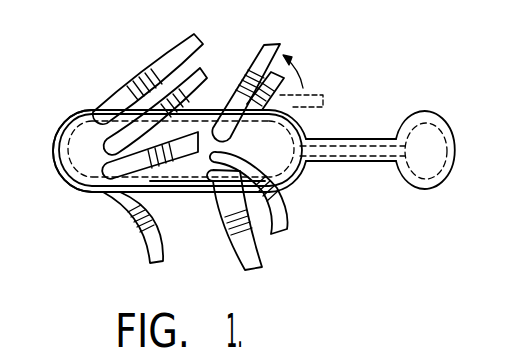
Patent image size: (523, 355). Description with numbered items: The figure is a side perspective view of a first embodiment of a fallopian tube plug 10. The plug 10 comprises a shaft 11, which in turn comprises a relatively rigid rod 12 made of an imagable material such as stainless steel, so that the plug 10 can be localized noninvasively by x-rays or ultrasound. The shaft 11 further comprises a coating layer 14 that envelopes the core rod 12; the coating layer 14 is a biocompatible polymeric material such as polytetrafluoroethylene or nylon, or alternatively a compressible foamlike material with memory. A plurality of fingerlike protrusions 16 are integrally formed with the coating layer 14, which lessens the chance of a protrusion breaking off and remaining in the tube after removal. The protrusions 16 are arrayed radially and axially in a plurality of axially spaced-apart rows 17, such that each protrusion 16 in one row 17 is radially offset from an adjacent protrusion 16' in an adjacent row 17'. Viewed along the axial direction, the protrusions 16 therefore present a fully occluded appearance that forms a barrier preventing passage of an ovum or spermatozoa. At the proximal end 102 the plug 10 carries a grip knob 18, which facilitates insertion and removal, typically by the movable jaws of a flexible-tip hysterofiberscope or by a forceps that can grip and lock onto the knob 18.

The fallopian tube plug 10 is at (116, 50).
The shaft 11 is at (183, 193).
The rod 12 is at (280, 158).
The coating layer 14 is at (68, 180).
The fingerlike protrusions 16 is at (150, 90).
The adjacent protrusion 16' is at (212, 98).
The row 17 is at (123, 227).
The adjacent row 17' is at (245, 211).
The grip knob 18 is at (432, 134).
The proximal end 102 is at (452, 163).